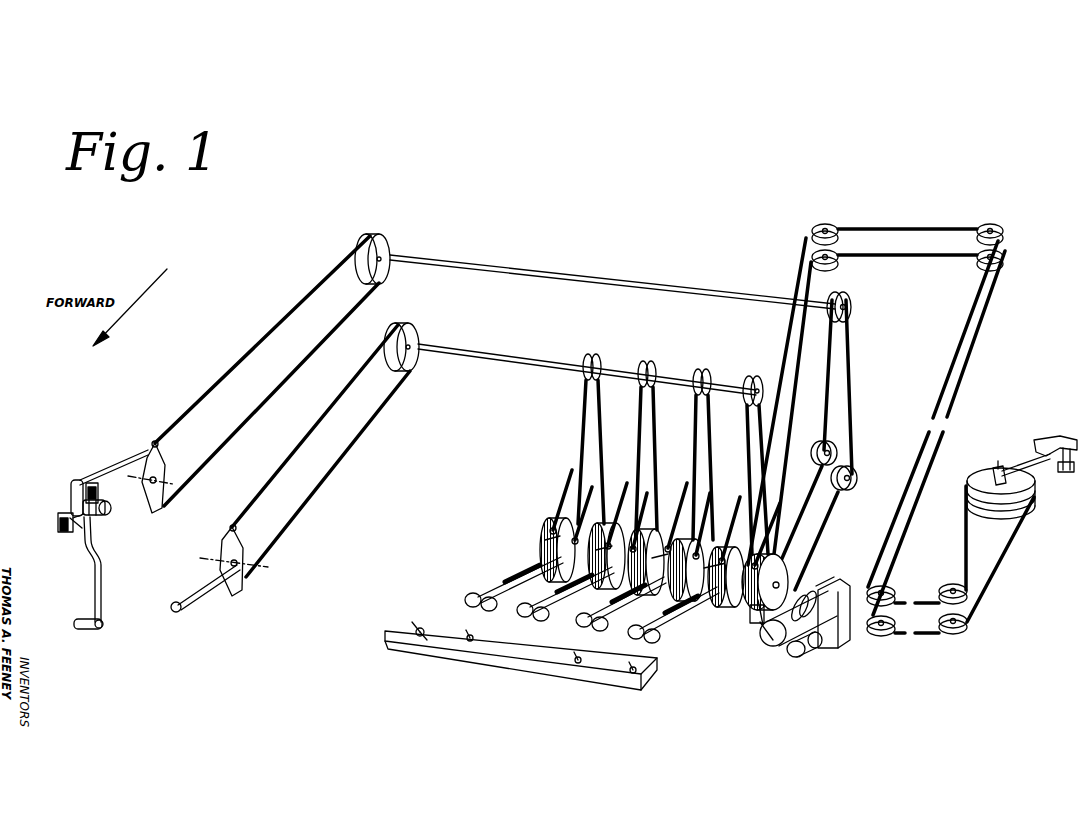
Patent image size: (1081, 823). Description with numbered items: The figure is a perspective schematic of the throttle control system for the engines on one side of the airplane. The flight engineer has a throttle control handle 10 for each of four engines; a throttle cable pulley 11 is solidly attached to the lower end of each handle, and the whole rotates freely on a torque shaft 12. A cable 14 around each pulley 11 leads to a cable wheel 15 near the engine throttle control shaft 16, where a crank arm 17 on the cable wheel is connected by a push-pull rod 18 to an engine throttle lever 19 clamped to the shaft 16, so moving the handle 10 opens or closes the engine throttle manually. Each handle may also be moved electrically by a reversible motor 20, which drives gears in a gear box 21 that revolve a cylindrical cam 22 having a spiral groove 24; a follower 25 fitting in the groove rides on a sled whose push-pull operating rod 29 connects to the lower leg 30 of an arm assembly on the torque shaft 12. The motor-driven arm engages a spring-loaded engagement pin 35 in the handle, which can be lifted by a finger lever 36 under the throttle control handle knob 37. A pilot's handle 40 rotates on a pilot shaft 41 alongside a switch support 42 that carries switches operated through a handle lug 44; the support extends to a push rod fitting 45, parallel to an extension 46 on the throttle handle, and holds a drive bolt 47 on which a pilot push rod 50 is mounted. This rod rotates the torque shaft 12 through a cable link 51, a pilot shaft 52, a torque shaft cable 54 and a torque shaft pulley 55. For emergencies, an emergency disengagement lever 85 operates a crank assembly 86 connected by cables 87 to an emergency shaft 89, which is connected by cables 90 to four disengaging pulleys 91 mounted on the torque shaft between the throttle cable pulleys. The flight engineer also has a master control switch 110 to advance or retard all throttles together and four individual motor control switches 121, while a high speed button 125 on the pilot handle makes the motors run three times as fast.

The throttle control handle 10 is at (527, 580).
The throttle cable pulley 11 is at (603, 505).
The torque shaft 12 is at (540, 545).
The cable 14 is at (803, 280).
The cable wheel 15 is at (1033, 498).
The engine throttle control shaft 16 is at (1068, 460).
The crank arm 17 is at (993, 468).
The push-pull rod 18 is at (1021, 462).
The engine throttle lever 19 is at (1050, 447).
The reversible motor 20 is at (800, 660).
The gear box 21 is at (808, 658).
The cylindrical cam 22 is at (771, 647).
The spiral groove 24 is at (838, 620).
The follower 25 is at (808, 600).
The push-pull operating rod 29 is at (773, 640).
The lower leg 30 is at (760, 617).
The engagement pin 35 is at (543, 540).
The finger lever 36 is at (513, 599).
The throttle control handle knob 37 is at (466, 599).
The pilot's handle 40 is at (97, 575).
The pilot shaft 41 is at (103, 512).
The switch support 42 is at (63, 513).
The handle lug 44 is at (77, 530).
The push rod fitting 45 is at (72, 487).
The extension 46 is at (112, 468).
The drive bolt 47 is at (95, 487).
The pilot push rod 50 is at (143, 457).
The cable link 51 is at (236, 366).
The pilot shaft 52 is at (443, 263).
The torque shaft cable 54 is at (848, 362).
The torque shaft pulley 55 is at (800, 585).
The emergency disengagement lever 85 is at (203, 592).
The crank assembly 86 is at (231, 528).
The cables 87 is at (322, 405).
The emergency shaft 89 is at (467, 355).
The cables 90 is at (633, 437).
The disengaging pulleys 91 is at (580, 485).
The flight engineer's master control switch 110 is at (432, 639).
The individual motor control switches 121 is at (633, 675).
The high speed button 125 is at (103, 624).